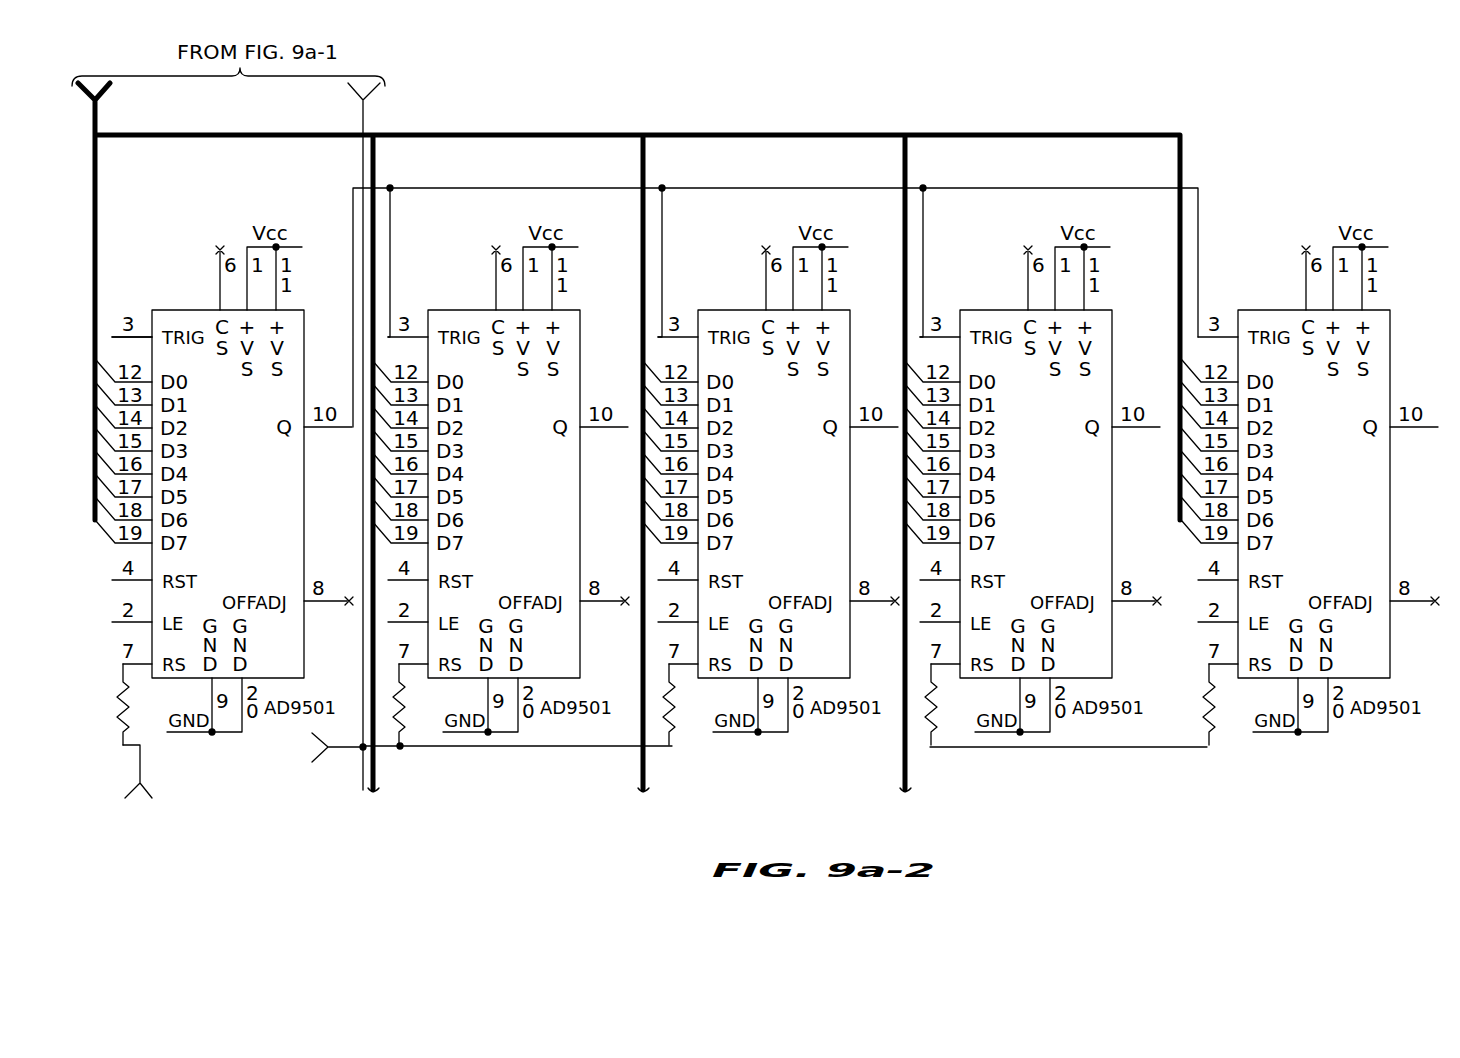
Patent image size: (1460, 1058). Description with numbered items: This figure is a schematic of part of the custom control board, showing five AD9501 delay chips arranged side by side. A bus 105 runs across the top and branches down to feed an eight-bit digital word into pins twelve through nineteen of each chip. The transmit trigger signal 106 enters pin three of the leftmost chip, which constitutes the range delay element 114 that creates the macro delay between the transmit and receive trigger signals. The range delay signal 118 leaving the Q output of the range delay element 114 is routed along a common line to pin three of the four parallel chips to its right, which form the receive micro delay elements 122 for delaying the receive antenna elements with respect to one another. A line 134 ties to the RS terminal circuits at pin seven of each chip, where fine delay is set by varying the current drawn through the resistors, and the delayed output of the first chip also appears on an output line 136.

The data bus 105 is at (97, 118).
The reset line 134 is at (365, 118).
The range delay signal 118 is at (352, 212).
The transmit trigger signal 106 is at (112, 335).
The range delay element 114 is at (218, 500).
The receive micro delay element 122 is at (494, 500).
The output line 136 is at (143, 772).